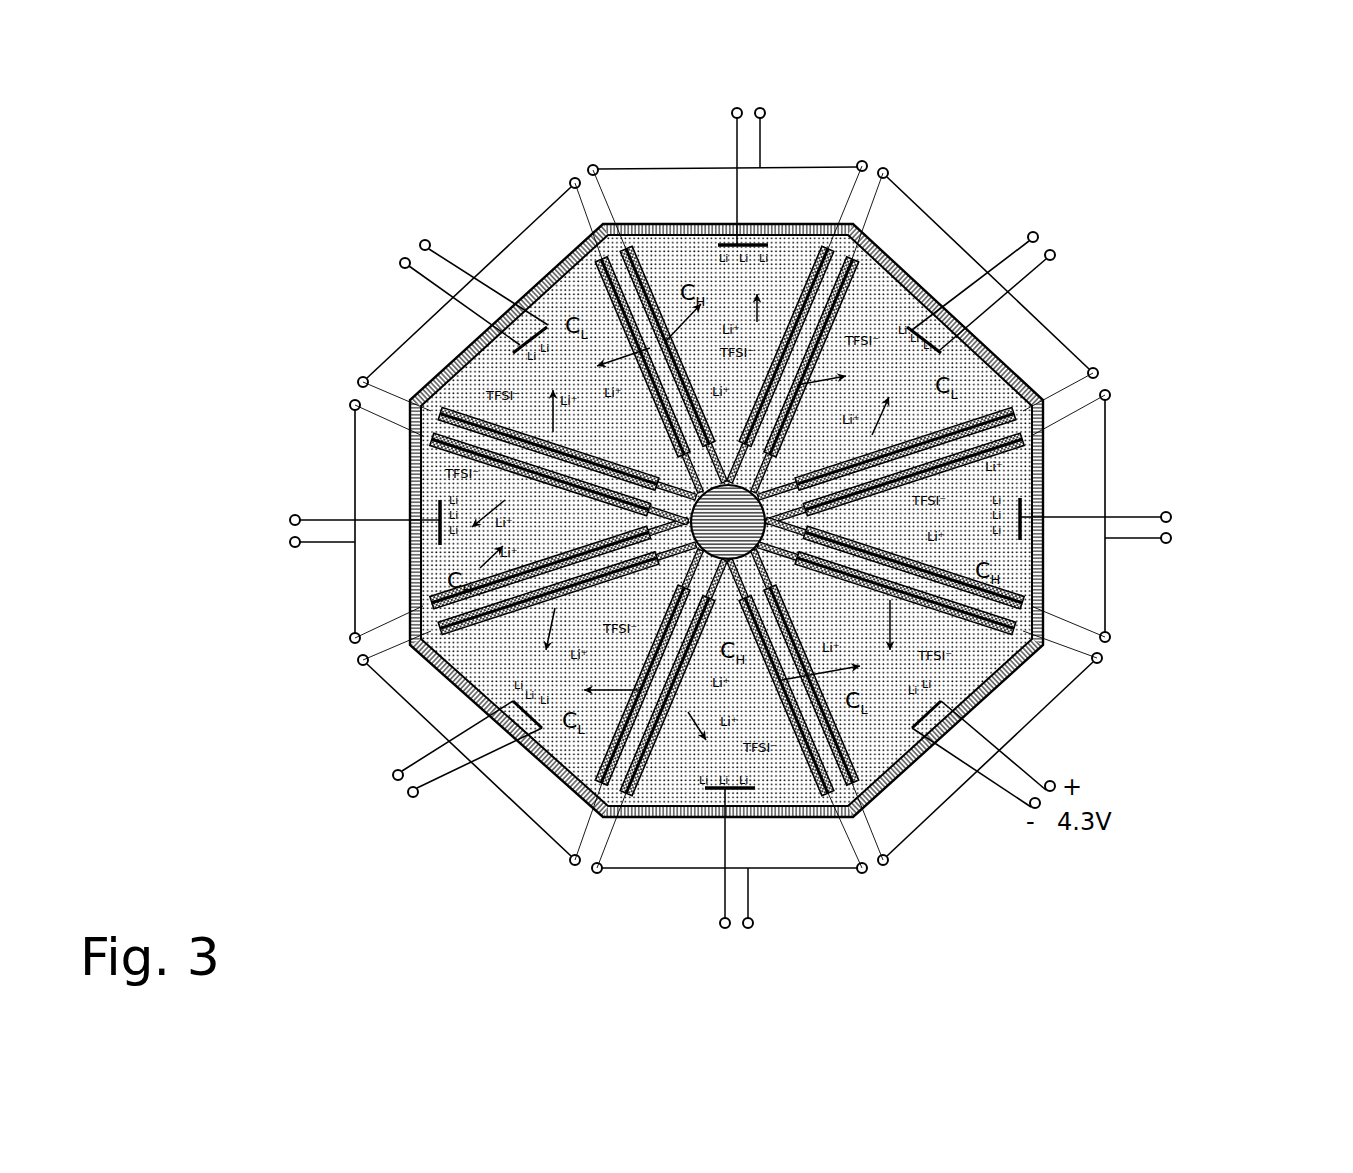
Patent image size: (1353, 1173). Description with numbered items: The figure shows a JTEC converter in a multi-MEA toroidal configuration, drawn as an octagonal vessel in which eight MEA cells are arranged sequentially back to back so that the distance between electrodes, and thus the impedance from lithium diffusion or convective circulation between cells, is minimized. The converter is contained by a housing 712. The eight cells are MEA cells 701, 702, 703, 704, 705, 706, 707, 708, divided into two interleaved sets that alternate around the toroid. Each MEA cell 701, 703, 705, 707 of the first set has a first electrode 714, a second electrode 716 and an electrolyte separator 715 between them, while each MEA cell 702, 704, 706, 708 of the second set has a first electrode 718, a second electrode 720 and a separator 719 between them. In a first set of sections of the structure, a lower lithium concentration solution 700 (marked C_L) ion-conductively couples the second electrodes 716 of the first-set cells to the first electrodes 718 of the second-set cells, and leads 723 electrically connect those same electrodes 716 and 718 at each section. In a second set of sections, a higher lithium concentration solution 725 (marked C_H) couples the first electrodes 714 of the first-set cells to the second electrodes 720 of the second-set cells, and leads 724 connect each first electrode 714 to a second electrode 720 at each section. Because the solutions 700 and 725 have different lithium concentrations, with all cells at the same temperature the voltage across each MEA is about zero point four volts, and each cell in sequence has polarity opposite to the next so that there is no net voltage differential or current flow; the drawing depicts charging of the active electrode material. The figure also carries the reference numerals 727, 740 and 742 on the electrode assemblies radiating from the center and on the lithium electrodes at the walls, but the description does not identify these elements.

The solution 700 is at (663, 449).
The MEA cell 701 is at (870, 158).
The MEA cell 702 is at (1120, 365).
The MEA cell 703 is at (1115, 665).
The MEA cell 704 is at (868, 893).
The MEA cell 705 is at (570, 870).
The MEA cell 706 is at (348, 656).
The MEA cell 707 is at (353, 372).
The MEA cell 708 is at (570, 168).
The housing 712 is at (475, 345).
The first electrode 714 is at (795, 240).
The electrolyte separator 715 is at (478, 875).
The second electrode 716 is at (510, 352).
The first electrode 718 is at (605, 255).
The separator 719 is at (440, 685).
The second electrode 720 is at (650, 250).
The leads 723 is at (1020, 305).
The leads 724 is at (1105, 587).
The solution 725 is at (906, 537).
The electrode pair 727 is at (505, 500).
The electrode assembly 740 is at (560, 300).
The lithium metal electrode with 3.9V source 742 is at (728, 242).